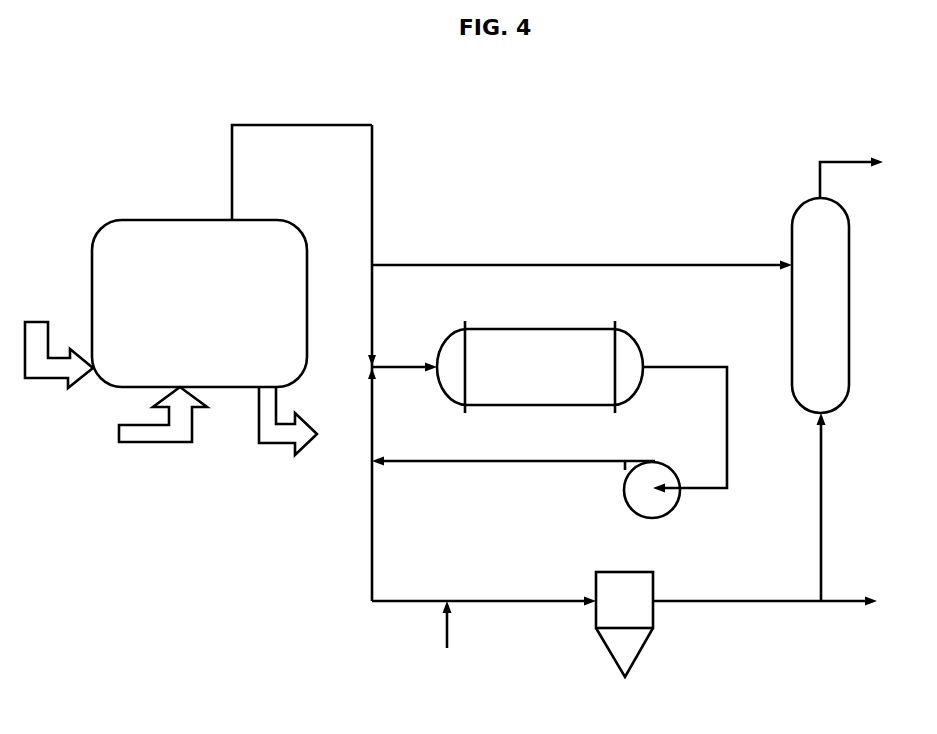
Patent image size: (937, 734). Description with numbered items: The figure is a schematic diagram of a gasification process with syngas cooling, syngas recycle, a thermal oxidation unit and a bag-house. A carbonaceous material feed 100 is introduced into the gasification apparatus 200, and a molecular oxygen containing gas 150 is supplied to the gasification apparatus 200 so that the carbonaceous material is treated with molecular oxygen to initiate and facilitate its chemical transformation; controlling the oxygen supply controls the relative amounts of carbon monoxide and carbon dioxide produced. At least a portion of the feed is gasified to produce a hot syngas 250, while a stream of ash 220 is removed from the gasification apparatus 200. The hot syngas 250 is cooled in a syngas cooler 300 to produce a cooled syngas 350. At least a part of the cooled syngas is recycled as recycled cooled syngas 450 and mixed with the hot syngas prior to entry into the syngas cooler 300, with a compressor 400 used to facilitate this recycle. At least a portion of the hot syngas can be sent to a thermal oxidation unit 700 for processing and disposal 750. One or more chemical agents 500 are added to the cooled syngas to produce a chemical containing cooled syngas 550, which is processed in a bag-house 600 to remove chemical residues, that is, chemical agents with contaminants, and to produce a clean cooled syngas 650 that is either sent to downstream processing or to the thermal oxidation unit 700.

The carbonaceous material feed 100 is at (57, 345).
The molecular oxygen containing gas 150 is at (163, 428).
The gasification apparatus 200 is at (186, 311).
The stream of ash 220 is at (286, 428).
The syngas 250 is at (302, 162).
The syngas cooler 300 is at (526, 377).
The cooled syngas 350 is at (685, 420).
The compressor 400 is at (633, 489).
The recycled cooled syngas 450 is at (513, 449).
The chemical agents 500 is at (445, 638).
The chemical containing cooled syngas 550 is at (484, 593).
The bag-house 600 is at (610, 611).
The clean cooled syngas 650 is at (765, 509).
The thermal oxidation unit 700 is at (806, 316).
The disposal 750 is at (851, 169).